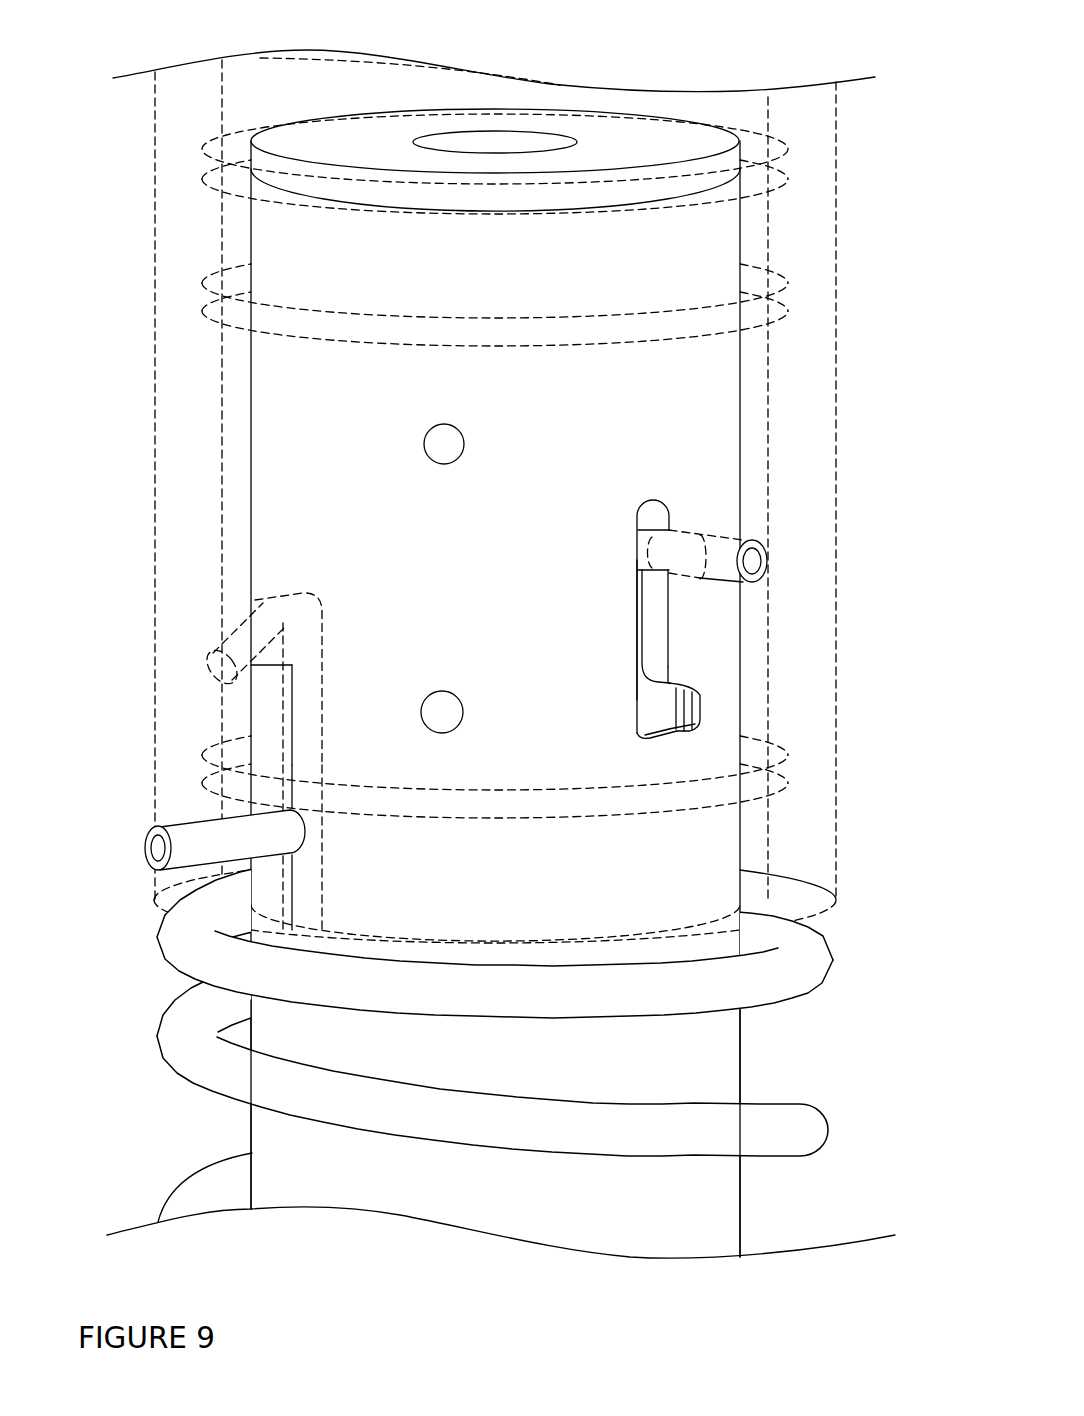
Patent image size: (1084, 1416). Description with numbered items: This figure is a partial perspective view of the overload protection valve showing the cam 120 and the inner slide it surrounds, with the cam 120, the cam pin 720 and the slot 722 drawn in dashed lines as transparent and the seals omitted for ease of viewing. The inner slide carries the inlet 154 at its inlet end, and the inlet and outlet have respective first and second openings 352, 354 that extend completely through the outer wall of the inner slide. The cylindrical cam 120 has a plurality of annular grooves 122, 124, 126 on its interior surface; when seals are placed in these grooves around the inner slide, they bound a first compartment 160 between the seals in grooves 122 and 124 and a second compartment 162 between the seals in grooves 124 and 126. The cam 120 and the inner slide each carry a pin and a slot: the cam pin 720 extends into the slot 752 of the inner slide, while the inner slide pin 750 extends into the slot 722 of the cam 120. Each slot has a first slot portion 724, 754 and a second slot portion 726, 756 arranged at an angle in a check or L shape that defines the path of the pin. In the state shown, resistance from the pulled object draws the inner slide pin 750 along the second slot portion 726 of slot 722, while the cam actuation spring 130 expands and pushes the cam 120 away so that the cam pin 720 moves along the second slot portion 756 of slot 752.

The inlet 154 is at (489, 125).
The first compartment 160 is at (237, 228).
The second compartment 162 is at (237, 480).
The groove 122 is at (768, 160).
The groove 124 is at (780, 297).
The groove 126 is at (787, 747).
The first opening 352 is at (425, 440).
The second opening 354 is at (422, 708).
The first slot portion 724 is at (243, 613).
The second slot portion 726 is at (322, 762).
The slot 722 is at (322, 893).
The inner slide pin 750 is at (143, 842).
The cam pin 720 is at (767, 575).
The slot 752 is at (670, 613).
The first slot portion 754 is at (703, 708).
The second slot portion 756 is at (637, 603).
The cam 120 is at (740, 1020).
The cam actuation spring 130 is at (823, 1147).